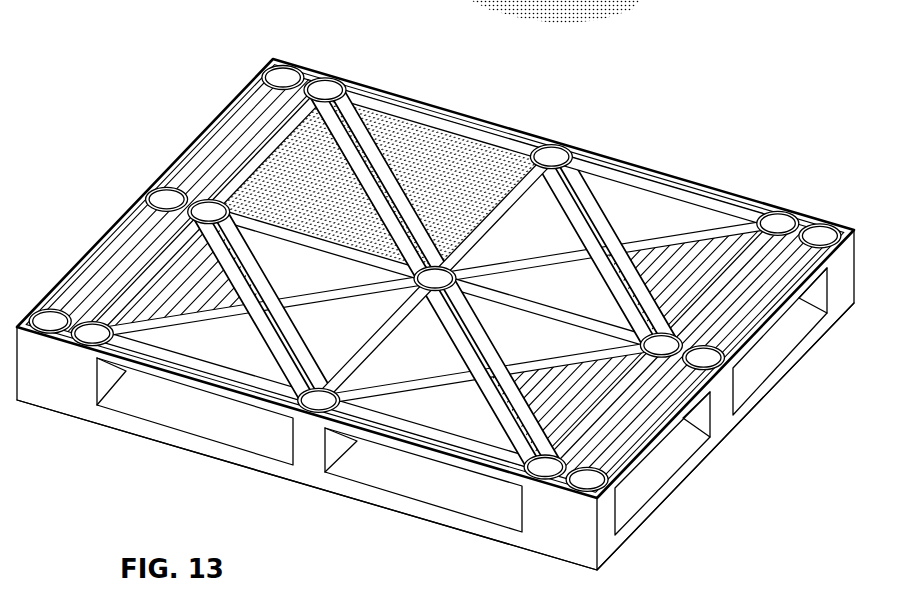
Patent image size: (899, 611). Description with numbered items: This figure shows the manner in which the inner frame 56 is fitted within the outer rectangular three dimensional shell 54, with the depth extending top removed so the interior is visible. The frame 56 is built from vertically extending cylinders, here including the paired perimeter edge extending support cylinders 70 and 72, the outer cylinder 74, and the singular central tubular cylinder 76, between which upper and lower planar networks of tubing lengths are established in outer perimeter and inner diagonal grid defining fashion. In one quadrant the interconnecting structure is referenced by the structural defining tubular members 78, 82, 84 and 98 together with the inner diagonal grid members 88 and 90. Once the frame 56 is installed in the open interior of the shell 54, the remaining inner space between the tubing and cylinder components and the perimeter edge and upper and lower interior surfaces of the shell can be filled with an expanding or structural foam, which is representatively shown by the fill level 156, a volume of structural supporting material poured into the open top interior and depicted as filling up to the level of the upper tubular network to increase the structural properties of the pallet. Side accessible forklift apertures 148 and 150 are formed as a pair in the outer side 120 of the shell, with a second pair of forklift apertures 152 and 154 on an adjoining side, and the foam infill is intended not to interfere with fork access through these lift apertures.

The outer shell 54 is at (80, 426).
The inner frame 56 is at (74, 199).
The support cylinders 70 is at (172, 194).
The support cylinders 72 is at (328, 85).
The outer cylinder 74 is at (553, 150).
The central tubular cylinder 76 is at (450, 275).
The tubular member 78 is at (497, 132).
The tubular member 82 is at (264, 118).
The tubular member 84 is at (507, 208).
The inner diagonal grid member 88 is at (232, 194).
The inner diagonal grid member 90 is at (410, 238).
The tubular member 98 is at (313, 250).
The outer side 120 is at (307, 468).
The forklift aperture 148 is at (210, 423).
The forklift aperture 150 is at (437, 495).
The forklift aperture 152 is at (663, 468).
The forklift aperture 154 is at (770, 358).
The fill level 156 is at (437, 205).